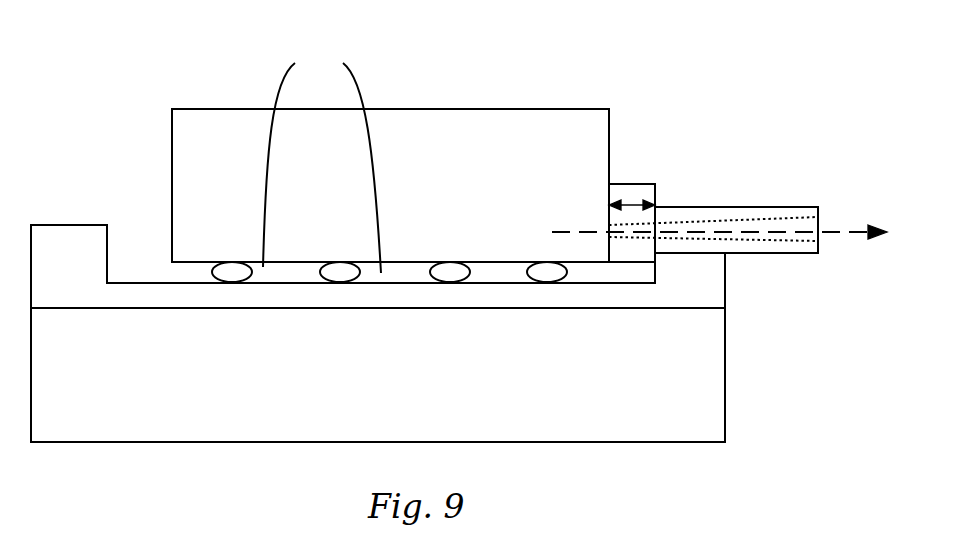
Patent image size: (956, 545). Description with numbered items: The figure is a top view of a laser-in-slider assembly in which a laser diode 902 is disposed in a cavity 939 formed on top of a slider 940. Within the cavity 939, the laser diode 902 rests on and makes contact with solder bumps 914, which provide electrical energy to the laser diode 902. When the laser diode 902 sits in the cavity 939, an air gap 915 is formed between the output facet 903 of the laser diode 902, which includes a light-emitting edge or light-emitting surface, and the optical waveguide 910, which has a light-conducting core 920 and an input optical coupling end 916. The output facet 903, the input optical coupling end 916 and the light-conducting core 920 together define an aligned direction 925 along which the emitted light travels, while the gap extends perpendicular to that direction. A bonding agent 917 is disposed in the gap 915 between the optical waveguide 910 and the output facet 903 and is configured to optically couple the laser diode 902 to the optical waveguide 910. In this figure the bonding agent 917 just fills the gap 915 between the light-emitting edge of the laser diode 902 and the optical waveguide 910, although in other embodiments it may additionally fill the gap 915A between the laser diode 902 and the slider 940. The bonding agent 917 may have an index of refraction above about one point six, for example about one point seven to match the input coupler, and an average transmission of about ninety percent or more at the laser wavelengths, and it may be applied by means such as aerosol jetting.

The laser diode 902 is at (485, 135).
The output facet 903 is at (609, 228).
The optical waveguide 910 is at (750, 203).
The solder bumps 914 is at (220, 273).
The air gap 915 is at (628, 203).
The gap 915A is at (129, 267).
The input optical coupling end 916 is at (657, 208).
The bonding agent 917 is at (618, 180).
The light-conducting core 920 is at (807, 235).
The aligned direction 925 is at (835, 228).
The cavity 939 is at (113, 223).
The slider 940 is at (715, 390).